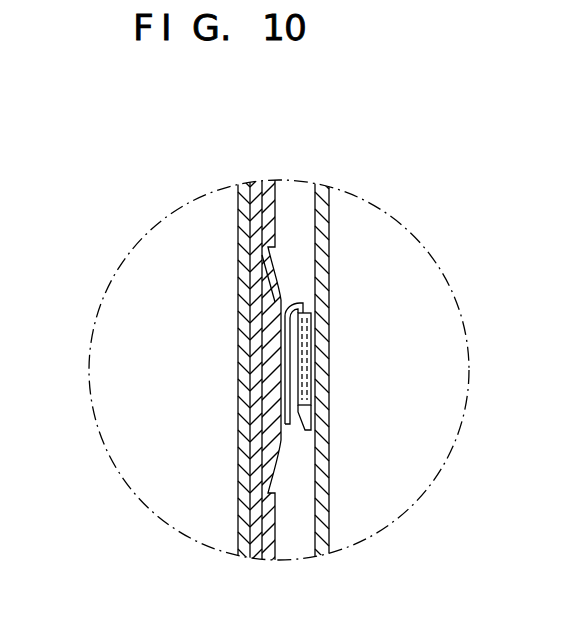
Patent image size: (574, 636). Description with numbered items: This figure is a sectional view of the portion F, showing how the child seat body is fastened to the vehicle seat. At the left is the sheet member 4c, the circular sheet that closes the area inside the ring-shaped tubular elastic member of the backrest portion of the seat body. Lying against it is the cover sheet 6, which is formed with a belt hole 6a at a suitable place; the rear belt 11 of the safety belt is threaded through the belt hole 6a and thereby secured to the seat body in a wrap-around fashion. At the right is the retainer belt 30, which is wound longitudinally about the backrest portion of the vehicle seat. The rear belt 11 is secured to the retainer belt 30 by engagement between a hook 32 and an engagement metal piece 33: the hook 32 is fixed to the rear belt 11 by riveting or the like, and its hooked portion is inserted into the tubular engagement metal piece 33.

The portion F is at (125, 495).
The sheet member 4c is at (246, 431).
The cover sheet 6 is at (270, 191).
The belt hole 6a is at (289, 533).
The rear belt 11 is at (272, 282).
The retainer belt 30 is at (326, 252).
The hook 32 is at (311, 413).
The engagement metal piece 33 is at (312, 348).